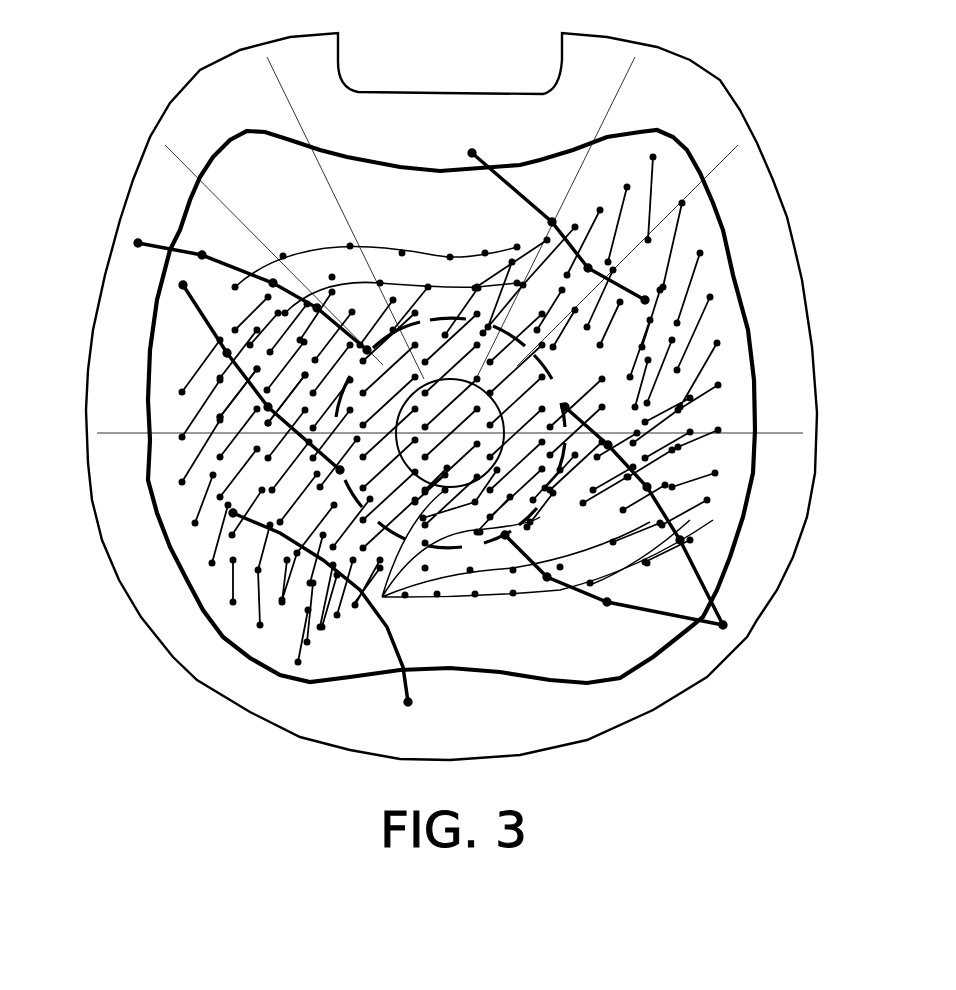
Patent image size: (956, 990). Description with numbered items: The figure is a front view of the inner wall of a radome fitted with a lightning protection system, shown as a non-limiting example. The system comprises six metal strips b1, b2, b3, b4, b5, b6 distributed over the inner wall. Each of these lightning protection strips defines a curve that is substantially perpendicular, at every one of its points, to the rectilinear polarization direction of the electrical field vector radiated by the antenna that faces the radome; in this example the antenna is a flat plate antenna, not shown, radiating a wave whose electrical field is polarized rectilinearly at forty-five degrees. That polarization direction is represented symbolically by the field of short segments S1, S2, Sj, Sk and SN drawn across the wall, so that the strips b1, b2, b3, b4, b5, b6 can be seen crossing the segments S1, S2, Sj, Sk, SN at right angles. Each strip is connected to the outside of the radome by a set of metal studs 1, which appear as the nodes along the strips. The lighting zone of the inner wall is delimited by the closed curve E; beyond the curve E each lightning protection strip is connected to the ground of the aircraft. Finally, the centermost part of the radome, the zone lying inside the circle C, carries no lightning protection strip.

The closed curve E is at (193, 203).
The circle C is at (462, 320).
The metal studs 1 is at (318, 306).
The segment S1 is at (283, 380).
The segment S2 is at (283, 450).
The segment Sk is at (653, 192).
The segment Sj is at (645, 268).
The segment SN is at (660, 580).
The metal strip b1 is at (148, 244).
The metal strip b2 is at (186, 298).
The metal strip b3 is at (382, 626).
The metal strip b4 is at (540, 197).
The metal strip b5 is at (707, 568).
The metal strip b6 is at (663, 600).